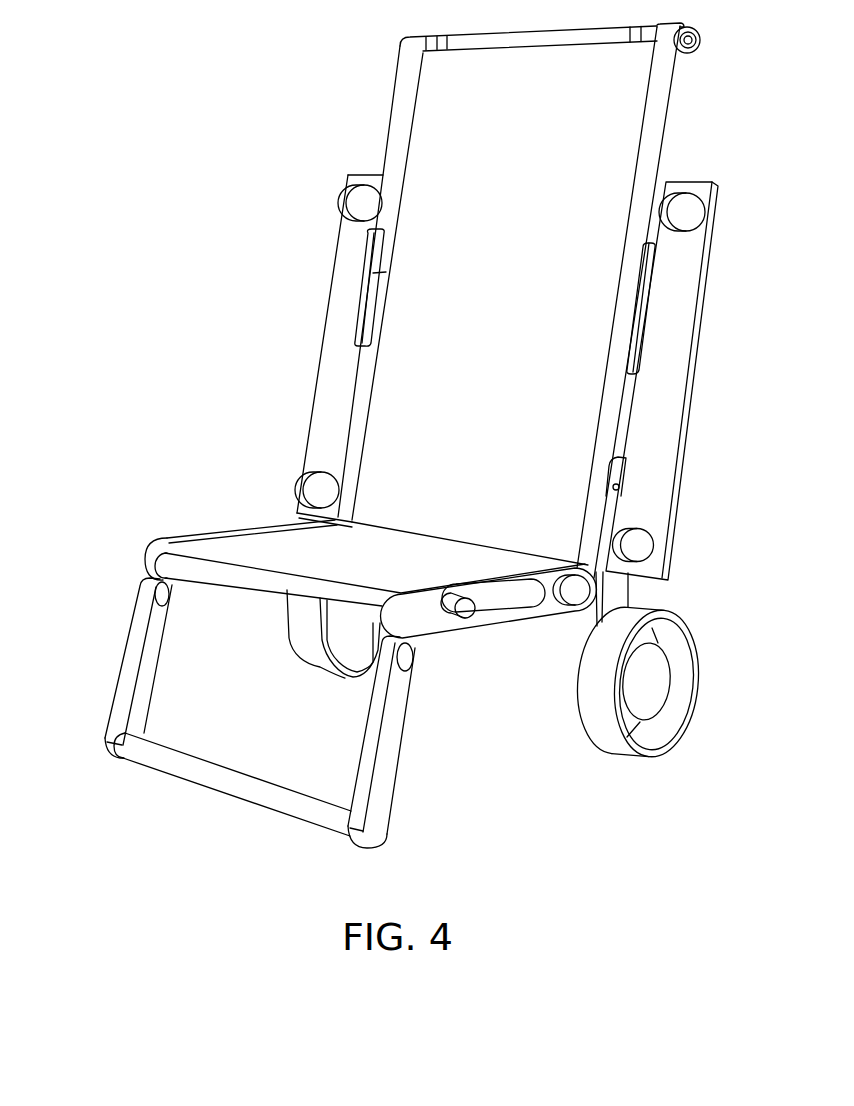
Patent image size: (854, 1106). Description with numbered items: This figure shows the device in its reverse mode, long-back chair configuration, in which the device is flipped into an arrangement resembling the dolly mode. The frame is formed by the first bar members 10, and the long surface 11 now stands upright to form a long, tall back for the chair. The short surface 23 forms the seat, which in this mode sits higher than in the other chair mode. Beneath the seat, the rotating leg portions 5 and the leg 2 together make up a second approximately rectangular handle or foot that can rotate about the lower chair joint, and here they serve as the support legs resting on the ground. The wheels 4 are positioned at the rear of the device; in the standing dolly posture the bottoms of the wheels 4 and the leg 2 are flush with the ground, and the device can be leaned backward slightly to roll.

The leg 2 is at (190, 765).
The wheels 4 is at (660, 610).
The rotating leg portions 5 is at (135, 639).
The first bar members 10 is at (661, 133).
The long surface 11 is at (407, 258).
The short surface 23 is at (252, 540).